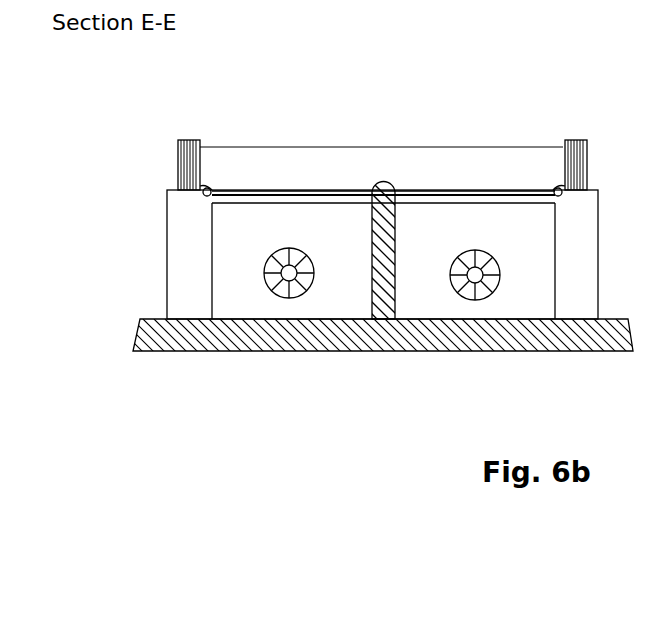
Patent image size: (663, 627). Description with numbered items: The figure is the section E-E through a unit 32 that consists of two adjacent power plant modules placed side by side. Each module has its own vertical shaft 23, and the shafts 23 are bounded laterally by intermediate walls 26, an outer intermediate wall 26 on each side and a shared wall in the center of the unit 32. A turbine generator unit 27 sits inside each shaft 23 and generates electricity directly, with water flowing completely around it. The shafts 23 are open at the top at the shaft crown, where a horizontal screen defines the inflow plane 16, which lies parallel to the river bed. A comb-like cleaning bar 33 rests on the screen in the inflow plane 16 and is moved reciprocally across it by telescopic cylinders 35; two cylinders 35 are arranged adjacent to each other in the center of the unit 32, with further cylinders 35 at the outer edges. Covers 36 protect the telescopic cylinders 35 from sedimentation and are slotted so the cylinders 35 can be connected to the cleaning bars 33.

The unit 32 is at (113, 156).
The telescopic cylinder 35 is at (204, 186).
The cover 36 is at (212, 192).
The inflow plane 16 is at (298, 196).
The cleaning bar 33 is at (330, 192).
The intermediate wall 26 is at (180, 266).
The shaft 23 is at (235, 312).
The turbine generator unit 27 is at (305, 298).